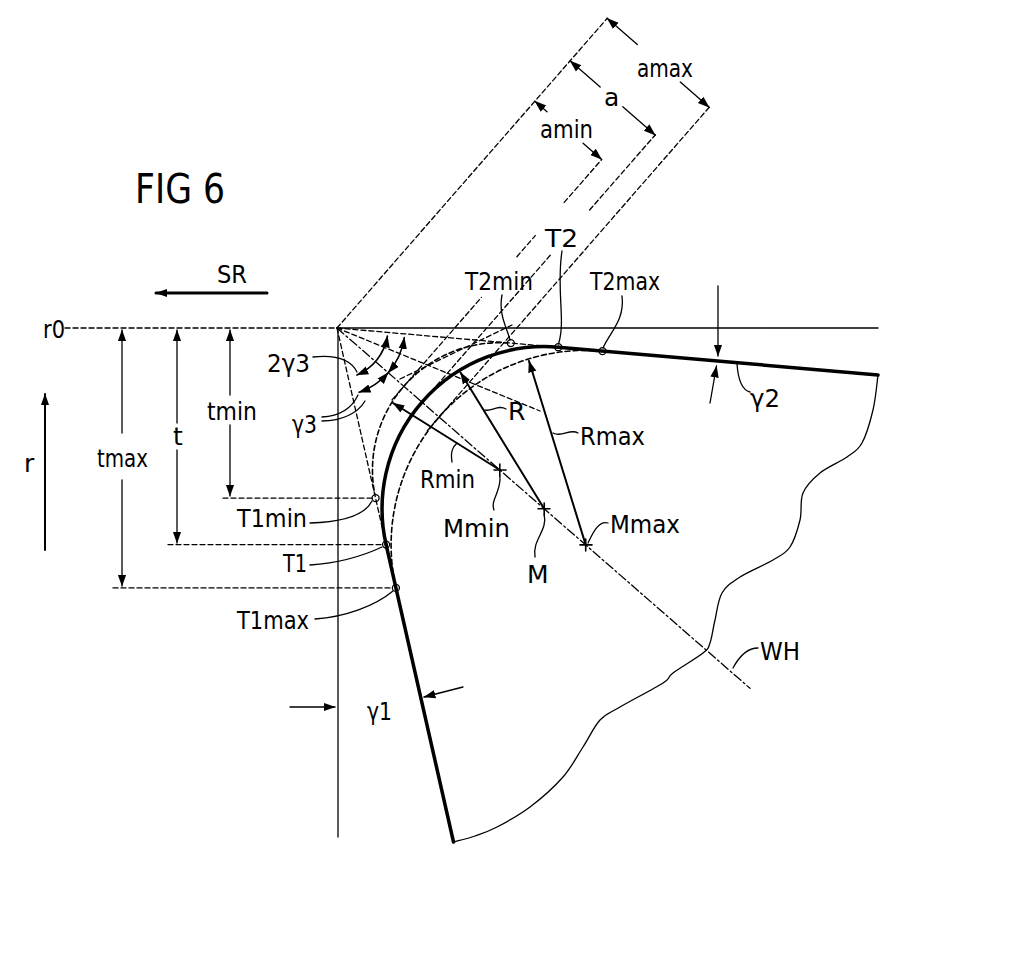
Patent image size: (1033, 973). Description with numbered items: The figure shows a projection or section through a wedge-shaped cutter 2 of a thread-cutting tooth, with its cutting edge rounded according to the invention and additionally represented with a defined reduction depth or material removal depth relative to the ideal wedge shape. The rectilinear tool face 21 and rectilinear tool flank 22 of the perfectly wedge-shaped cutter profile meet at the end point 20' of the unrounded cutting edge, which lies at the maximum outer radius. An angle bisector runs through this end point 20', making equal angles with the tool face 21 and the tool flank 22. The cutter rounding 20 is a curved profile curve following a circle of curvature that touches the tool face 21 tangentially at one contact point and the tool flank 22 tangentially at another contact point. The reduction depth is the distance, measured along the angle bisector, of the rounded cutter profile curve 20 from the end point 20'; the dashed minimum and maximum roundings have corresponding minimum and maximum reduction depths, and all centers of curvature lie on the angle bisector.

The cutter 2 is at (582, 677).
The cutter rounding 20 is at (470, 406).
The end point 20' is at (441, 406).
The tool face 21 is at (438, 795).
The tool flank 22 is at (805, 366).